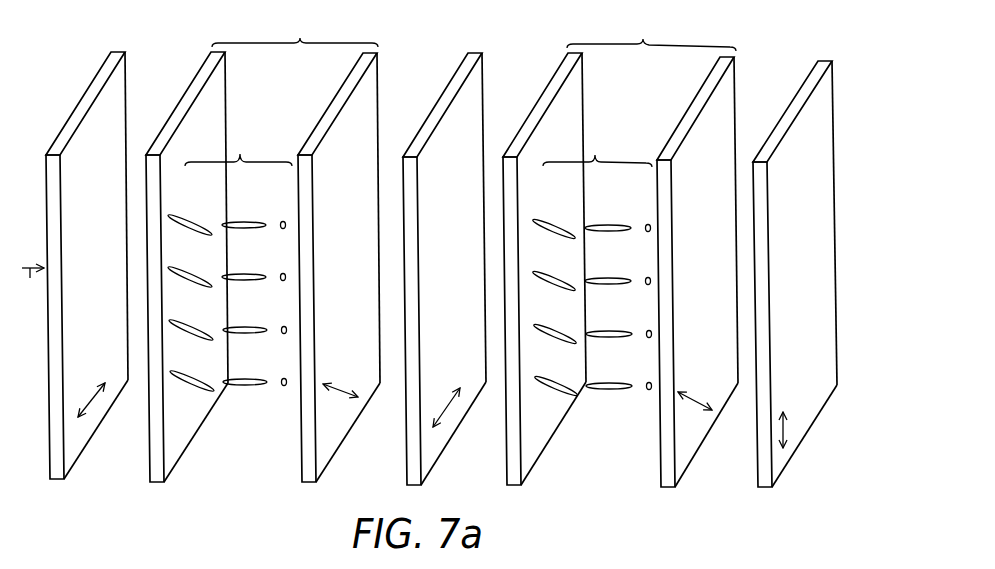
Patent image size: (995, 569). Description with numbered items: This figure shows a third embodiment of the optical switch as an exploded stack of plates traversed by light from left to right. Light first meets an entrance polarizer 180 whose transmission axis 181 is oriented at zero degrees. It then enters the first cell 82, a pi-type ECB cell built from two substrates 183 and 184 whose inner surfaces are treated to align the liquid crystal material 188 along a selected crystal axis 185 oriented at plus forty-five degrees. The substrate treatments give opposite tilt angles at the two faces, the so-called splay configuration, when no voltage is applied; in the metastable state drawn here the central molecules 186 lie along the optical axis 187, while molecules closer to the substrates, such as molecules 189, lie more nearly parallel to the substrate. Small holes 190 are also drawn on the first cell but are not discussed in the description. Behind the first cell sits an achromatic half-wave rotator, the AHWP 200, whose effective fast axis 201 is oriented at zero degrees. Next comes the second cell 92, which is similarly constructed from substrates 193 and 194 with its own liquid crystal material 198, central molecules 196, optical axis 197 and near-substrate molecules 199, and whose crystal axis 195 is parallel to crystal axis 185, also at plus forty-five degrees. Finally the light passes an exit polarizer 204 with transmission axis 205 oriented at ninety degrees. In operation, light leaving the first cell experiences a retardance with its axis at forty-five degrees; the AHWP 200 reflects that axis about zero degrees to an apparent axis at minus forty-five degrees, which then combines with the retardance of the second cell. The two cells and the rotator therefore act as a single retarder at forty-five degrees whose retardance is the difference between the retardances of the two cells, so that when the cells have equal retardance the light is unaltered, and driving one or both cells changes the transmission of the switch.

The first cell module 82 is at (295, 29).
The second cell module 92 is at (651, 32).
The entrance polarizer 180 is at (112, 53).
The transmission axis 181 is at (100, 392).
The substrate 183 is at (155, 483).
The substrate 184 is at (305, 483).
The crystal axis 185 is at (328, 386).
The central molecules 186 is at (225, 384).
The optical axis 187 is at (32, 286).
The liquid crystal material 188 is at (238, 143).
The molecules closer to the substrates 189 is at (212, 388).
The holes 190 is at (285, 387).
The third slotted plate 193 is at (512, 486).
The fourth plate 194 is at (666, 488).
The crystal axis 195 is at (690, 397).
The horizontal slots 196 is at (591, 386).
The holes 197 is at (650, 390).
The slot region 198 is at (597, 145).
The inclined slots 199 is at (568, 392).
The AHWP 200 is at (473, 53).
The effective fast axis 201 is at (458, 393).
The exit polarizer 204 is at (822, 61).
The transmission axis 205 is at (784, 416).